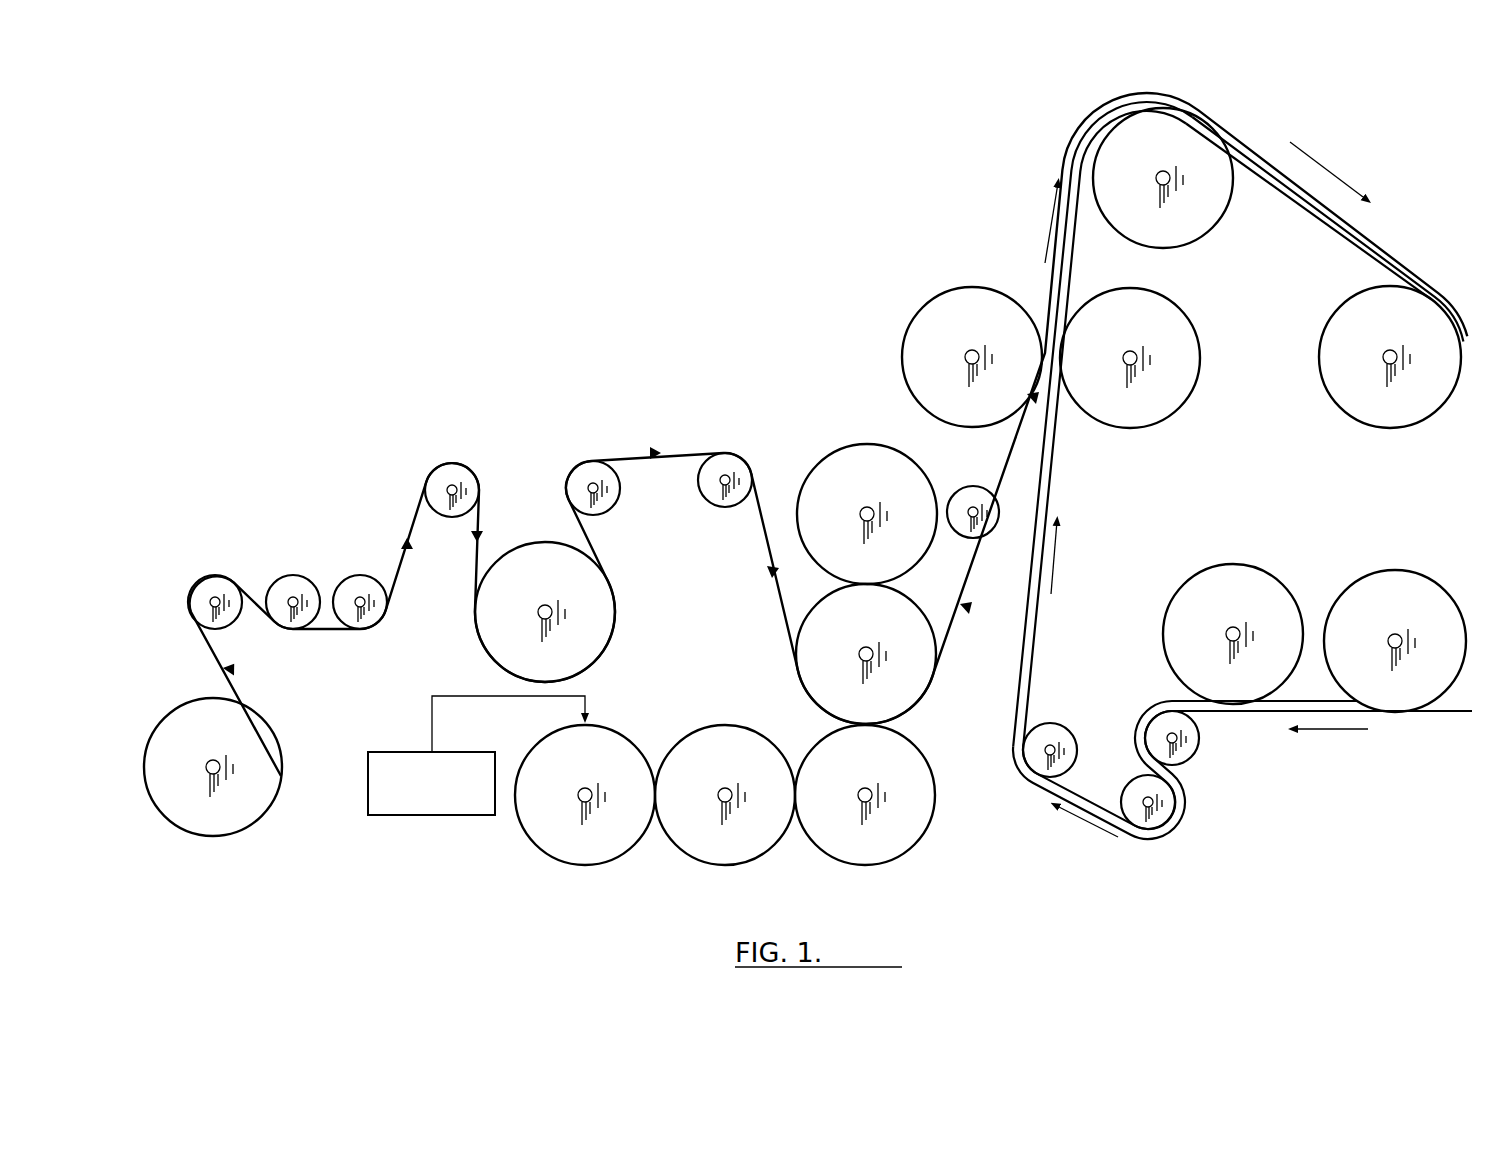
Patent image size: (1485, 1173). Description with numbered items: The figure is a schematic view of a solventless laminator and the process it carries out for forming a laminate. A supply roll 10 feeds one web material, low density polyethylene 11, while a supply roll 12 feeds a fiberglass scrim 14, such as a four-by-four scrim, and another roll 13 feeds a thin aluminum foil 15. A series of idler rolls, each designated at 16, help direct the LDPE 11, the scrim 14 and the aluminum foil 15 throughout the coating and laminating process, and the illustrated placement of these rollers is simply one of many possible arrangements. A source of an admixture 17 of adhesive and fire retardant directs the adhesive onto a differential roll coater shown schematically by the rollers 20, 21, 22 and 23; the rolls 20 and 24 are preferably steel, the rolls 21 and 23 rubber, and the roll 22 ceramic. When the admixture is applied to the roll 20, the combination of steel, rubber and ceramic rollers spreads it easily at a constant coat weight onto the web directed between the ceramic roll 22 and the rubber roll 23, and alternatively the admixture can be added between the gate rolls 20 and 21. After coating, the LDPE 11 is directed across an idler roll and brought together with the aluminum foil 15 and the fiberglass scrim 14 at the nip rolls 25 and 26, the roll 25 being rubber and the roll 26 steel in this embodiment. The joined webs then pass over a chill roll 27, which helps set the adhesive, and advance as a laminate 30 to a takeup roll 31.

The supply roll 10 is at (185, 715).
The low density polyethylene 11 is at (245, 687).
The supply roll 12 is at (1405, 590).
The roll 13 is at (1245, 573).
The fiberglass scrim 14 is at (1223, 470).
The aluminum foil 15 is at (1035, 647).
The idler rolls 16 is at (198, 590).
The source of admixture 17 is at (452, 796).
The roll 20 is at (552, 843).
The roll 21 is at (702, 843).
The ceramic roll 22 is at (842, 843).
The rubber roll 23 is at (906, 687).
The roll 24 is at (837, 460).
The nip roll 25 is at (915, 328).
The nip roll 26 is at (1133, 413).
The chill roll 27 is at (1203, 222).
The laminate 30 is at (1382, 238).
The takeup roll 31 is at (1328, 363).